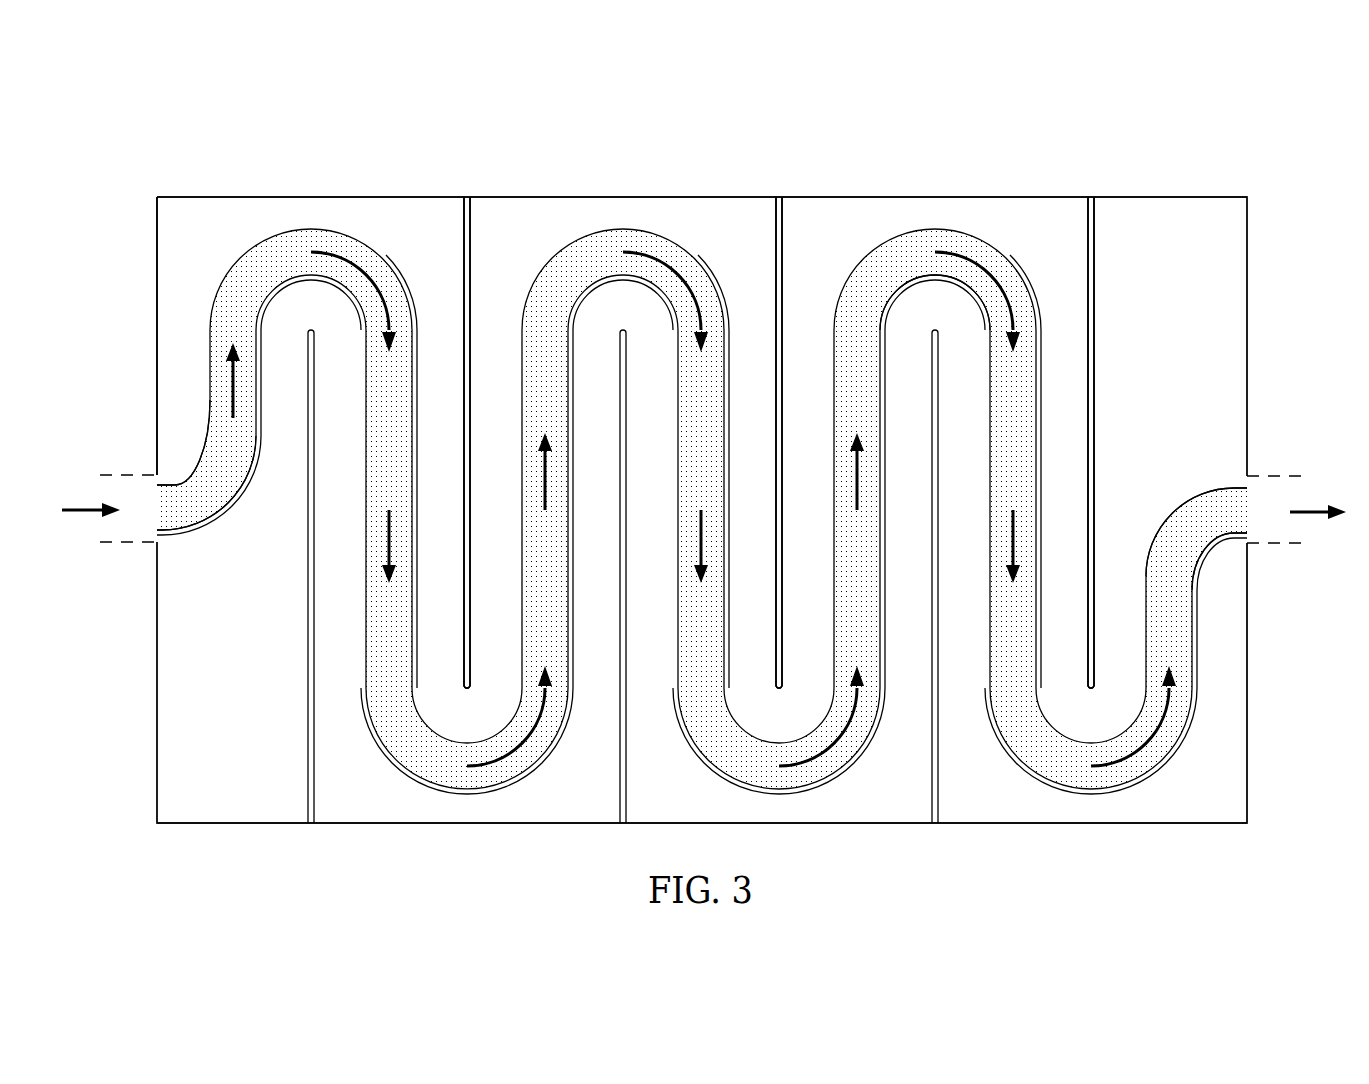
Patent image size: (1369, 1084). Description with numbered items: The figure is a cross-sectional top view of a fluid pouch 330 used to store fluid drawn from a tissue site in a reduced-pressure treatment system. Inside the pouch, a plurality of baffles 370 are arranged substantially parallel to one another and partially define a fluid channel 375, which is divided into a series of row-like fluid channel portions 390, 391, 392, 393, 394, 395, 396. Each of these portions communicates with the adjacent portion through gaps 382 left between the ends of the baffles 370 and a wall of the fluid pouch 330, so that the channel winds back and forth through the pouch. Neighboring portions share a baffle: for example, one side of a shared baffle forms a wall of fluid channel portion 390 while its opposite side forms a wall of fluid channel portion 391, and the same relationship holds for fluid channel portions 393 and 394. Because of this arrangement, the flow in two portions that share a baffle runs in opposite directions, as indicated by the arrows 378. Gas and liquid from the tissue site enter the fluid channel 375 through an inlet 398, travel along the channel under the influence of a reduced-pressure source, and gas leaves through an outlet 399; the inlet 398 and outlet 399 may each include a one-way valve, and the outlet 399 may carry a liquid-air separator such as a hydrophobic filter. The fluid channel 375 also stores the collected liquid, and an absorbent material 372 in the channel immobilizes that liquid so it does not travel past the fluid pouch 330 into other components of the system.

The fluid pouch 330 is at (1256, 148).
The baffles 370 is at (472, 212).
The absorbent material 372 is at (373, 462).
The fluid channel 375 is at (216, 212).
The arrows 378 is at (351, 255).
The gaps 382 is at (962, 288).
The fluid channel portion 390 is at (172, 268).
The fluid channel portion 391 is at (429, 242).
The fluid channel portion 392 is at (509, 242).
The fluid channel portion 393 is at (741, 242).
The fluid channel portion 394 is at (823, 242).
The fluid channel portion 395 is at (1051, 242).
The fluid channel portion 396 is at (1137, 242).
The inlet 398 is at (155, 498).
The outlet 399 is at (1249, 500).